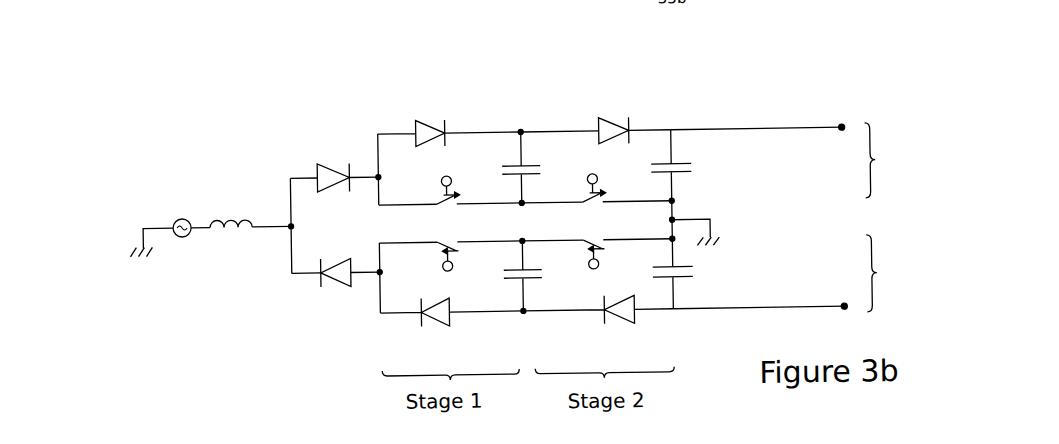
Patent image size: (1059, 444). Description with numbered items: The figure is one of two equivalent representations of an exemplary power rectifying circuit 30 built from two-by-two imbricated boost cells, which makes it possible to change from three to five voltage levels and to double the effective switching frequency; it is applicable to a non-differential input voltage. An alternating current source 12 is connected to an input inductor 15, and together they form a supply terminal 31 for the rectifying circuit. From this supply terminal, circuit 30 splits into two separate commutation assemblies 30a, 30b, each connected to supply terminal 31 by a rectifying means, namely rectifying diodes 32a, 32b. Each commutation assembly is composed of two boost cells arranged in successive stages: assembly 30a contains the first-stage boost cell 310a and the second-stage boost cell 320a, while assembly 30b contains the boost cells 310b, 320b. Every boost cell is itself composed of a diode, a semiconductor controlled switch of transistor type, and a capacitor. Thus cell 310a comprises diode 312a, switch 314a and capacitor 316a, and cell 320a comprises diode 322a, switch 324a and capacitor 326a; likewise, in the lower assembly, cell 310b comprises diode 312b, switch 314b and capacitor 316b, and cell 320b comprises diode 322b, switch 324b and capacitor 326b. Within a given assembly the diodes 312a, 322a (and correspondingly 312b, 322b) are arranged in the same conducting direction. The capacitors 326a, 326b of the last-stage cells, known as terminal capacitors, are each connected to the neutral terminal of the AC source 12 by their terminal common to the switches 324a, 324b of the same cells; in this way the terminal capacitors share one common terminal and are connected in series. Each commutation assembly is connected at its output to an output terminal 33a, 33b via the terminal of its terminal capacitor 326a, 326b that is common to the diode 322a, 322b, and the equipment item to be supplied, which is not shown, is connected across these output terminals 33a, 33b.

The alternating current source 12 is at (173, 210).
The input inductor 15 is at (221, 212).
The circuit 30 is at (282, 85).
The supply terminal 31 is at (288, 229).
The rectifying diode 32a is at (317, 176).
The rectifying diode 32b is at (337, 281).
The boost cell 310a is at (389, 146).
The boost cell 310b is at (396, 294).
The diode 312a is at (449, 123).
The diode 312b is at (452, 323).
The semiconductor controlled switch 314a is at (450, 201).
The semiconductor controlled switch 314b is at (451, 248).
The capacitor 316a is at (535, 168).
The capacitor 316b is at (546, 275).
The boost cell 320a is at (582, 147).
The boost cell 320b is at (660, 299).
The diode 322a is at (634, 122).
The diode 322b is at (583, 322).
The semiconductor controlled switch 324a is at (596, 200).
The semiconductor controlled switch 324b is at (597, 247).
The terminal capacitor 326a is at (686, 198).
The terminal capacitor 326b is at (697, 287).
The commutation assembly 30a is at (895, 160).
The commutation assembly 30b is at (896, 273).
The output terminal 33a is at (762, 118).
The output terminal 33b is at (765, 296).